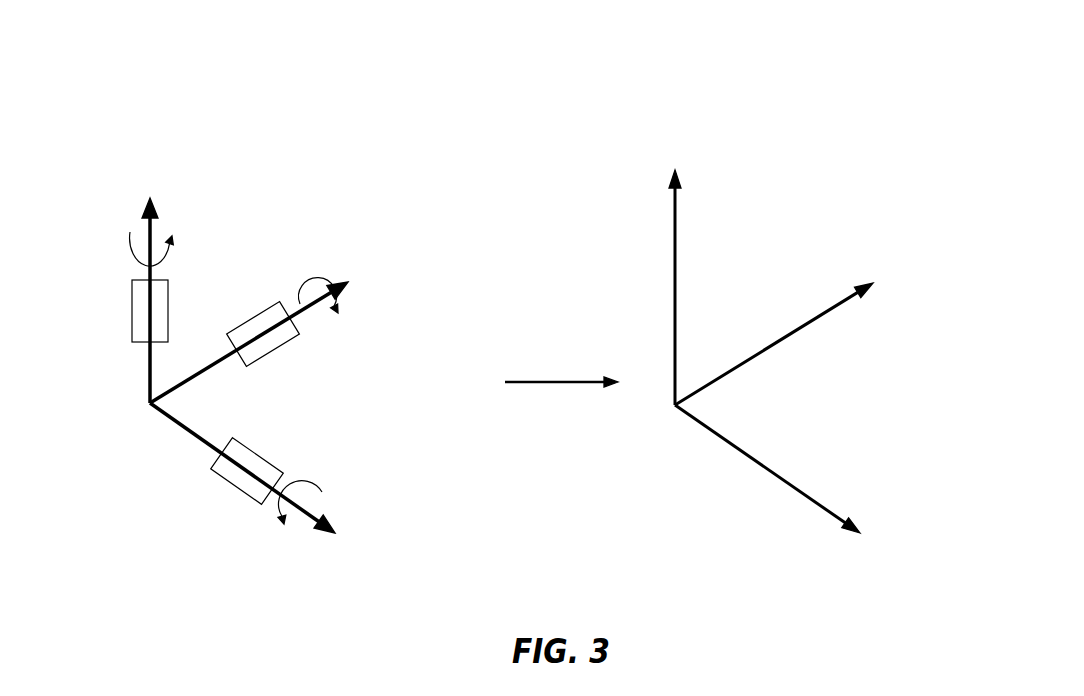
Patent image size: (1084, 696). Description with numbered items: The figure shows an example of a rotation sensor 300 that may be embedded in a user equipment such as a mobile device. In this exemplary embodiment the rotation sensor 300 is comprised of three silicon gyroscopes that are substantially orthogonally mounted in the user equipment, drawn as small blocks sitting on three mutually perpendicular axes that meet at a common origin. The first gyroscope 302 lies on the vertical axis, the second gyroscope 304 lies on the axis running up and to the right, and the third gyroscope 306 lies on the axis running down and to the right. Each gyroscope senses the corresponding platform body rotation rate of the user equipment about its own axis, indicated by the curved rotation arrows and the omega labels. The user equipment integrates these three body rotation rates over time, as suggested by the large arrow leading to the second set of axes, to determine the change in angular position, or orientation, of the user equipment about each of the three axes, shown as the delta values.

The coordinate frame transformation diagram 300 is at (508, 39).
The first gyroscope 302 is at (132, 312).
The second gyroscope 304 is at (252, 318).
The third gyroscope 306 is at (255, 452).